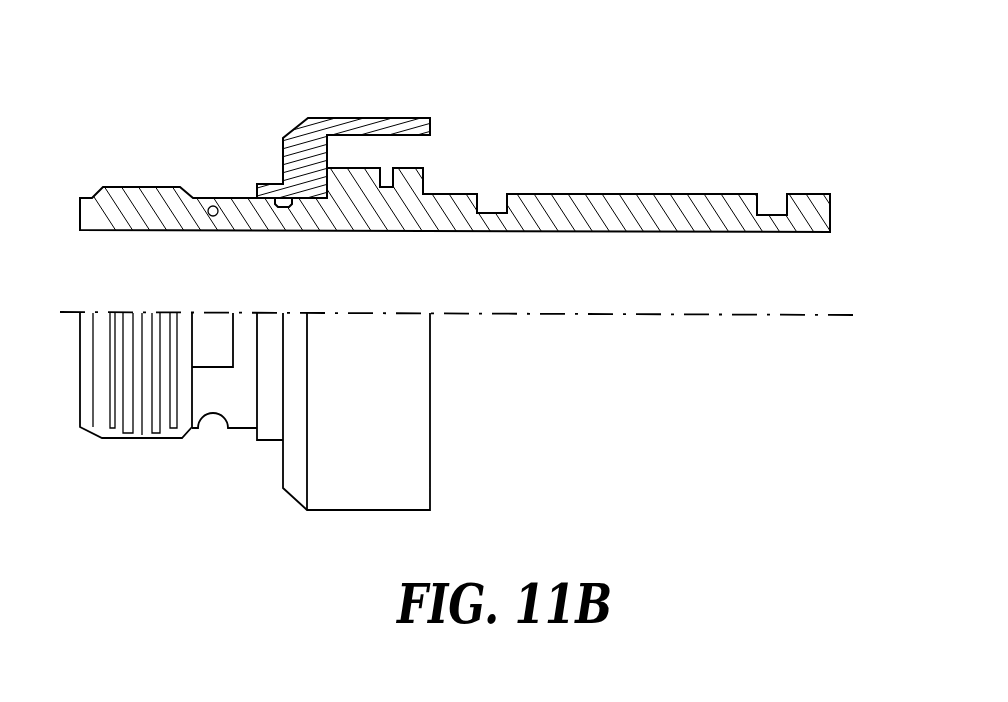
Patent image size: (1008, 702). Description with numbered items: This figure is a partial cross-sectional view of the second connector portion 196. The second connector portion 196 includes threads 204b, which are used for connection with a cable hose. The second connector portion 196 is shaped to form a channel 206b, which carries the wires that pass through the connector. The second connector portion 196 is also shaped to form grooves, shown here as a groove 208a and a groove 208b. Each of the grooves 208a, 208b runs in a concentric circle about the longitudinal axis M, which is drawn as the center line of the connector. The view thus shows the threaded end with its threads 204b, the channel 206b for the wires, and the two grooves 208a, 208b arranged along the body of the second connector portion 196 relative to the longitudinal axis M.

The second connector portion 196 is at (470, 141).
The groove 208a is at (493, 207).
The groove 208b is at (770, 207).
The channel 206b is at (255, 397).
The threads 204b is at (133, 440).
The longitudinal axis M is at (538, 315).